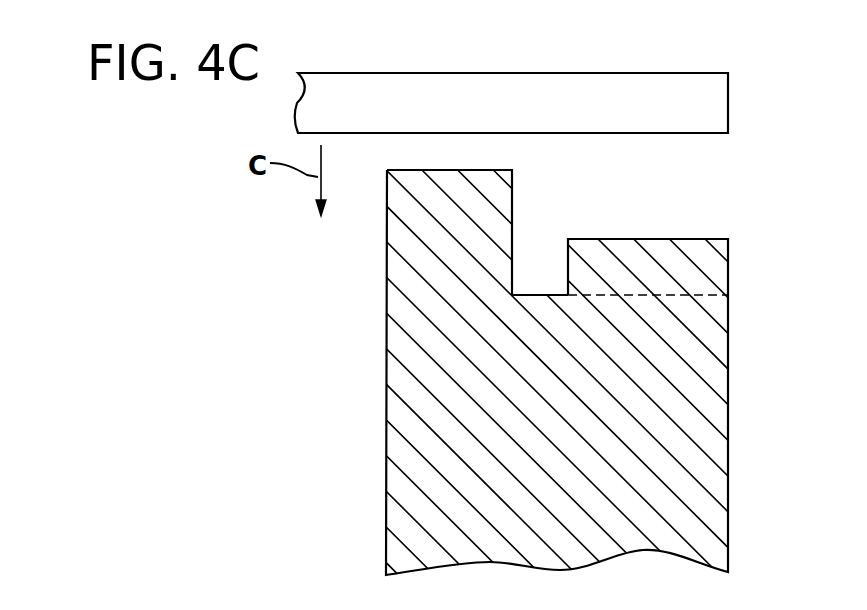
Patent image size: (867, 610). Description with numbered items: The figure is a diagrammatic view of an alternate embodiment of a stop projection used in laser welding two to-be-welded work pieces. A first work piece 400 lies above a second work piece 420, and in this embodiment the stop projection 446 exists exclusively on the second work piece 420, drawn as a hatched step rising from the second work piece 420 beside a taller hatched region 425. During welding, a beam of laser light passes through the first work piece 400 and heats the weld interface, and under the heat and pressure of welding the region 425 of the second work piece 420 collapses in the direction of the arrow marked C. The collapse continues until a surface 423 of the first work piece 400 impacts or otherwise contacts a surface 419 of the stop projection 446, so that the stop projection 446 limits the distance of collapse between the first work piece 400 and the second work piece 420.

The first work piece 400 is at (413, 73).
The surface 423 is at (652, 133).
The second work piece 420 is at (385, 365).
The region of the second work piece 425 is at (437, 200).
The surface of the stop projection 419 is at (615, 237).
The stop projection 446 is at (653, 247).